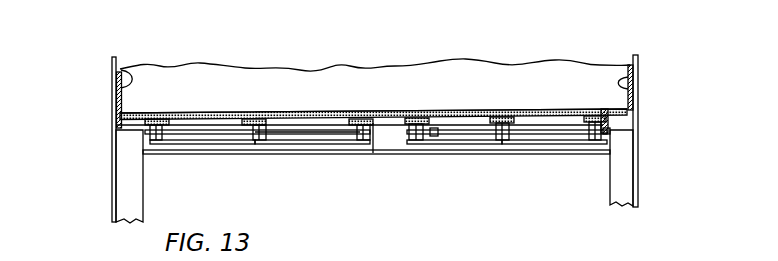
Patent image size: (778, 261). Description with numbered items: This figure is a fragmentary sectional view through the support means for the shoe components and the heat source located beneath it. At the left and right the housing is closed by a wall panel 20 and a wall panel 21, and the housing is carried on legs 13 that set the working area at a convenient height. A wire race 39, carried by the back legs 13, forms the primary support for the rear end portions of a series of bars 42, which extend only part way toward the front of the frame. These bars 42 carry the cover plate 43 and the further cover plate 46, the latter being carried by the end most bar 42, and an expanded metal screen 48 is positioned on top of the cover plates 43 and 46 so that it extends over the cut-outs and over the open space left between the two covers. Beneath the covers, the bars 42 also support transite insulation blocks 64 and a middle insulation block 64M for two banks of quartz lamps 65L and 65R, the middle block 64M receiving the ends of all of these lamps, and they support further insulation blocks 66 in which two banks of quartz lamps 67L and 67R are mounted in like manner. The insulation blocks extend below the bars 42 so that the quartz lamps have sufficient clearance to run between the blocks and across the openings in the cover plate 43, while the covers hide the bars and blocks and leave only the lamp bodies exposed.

The legs 13 is at (115, 190).
The wall panel 20 is at (112, 60).
The wall panel 21 is at (636, 72).
The wire race 39 is at (372, 153).
The bars 42 is at (244, 118).
The cover plate 43 is at (140, 113).
The cover plate 46 is at (608, 110).
The expanded metal screen 48 is at (470, 109).
The transite insulation blocks 64 is at (143, 137).
The middle insulation block 64M is at (292, 133).
The left bank of quartz lamps 65L is at (182, 143).
The right bank of quartz lamps 65R is at (296, 137).
The transite insulation blocks 66 is at (608, 132).
The left bank of quartz lamps 67L is at (427, 135).
The right bank of quartz lamps 67R is at (555, 138).